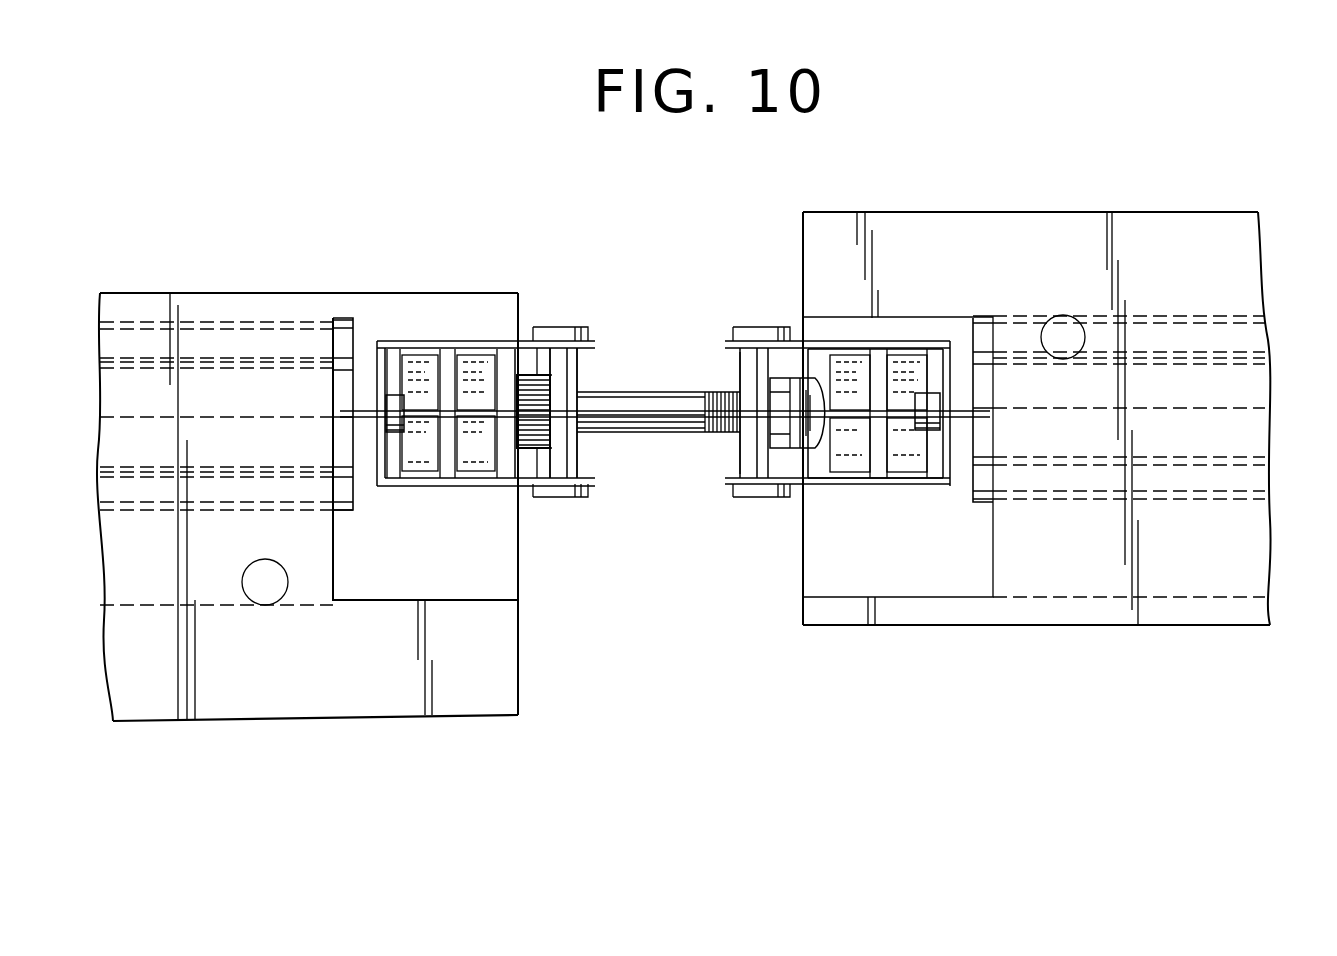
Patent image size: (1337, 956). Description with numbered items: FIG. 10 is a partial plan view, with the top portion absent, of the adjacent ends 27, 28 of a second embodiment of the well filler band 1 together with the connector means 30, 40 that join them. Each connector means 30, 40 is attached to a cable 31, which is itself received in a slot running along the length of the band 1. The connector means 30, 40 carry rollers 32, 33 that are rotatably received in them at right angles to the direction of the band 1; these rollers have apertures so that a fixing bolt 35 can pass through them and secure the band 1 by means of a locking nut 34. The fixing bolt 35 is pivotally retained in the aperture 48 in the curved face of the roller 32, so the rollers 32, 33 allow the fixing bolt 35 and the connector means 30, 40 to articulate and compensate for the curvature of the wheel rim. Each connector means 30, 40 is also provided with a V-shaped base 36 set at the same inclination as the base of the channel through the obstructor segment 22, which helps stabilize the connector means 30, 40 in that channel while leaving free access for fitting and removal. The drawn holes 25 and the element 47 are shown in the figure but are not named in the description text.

The obstructor segment 22 is at (213, 335).
The hole 25 is at (263, 592).
The adjacent end 27 is at (317, 730).
The adjacent end 28 is at (918, 630).
The band 1 is at (362, 410).
The connector means 30 is at (503, 338).
The cable 31 is at (385, 398).
The roller 32 is at (758, 494).
The roller 33 is at (563, 494).
The locking nut 34 is at (788, 376).
The fixing bolt 35 is at (668, 433).
The V-shaped base 36 is at (477, 360).
The connector means 40 is at (817, 340).
The plate 47 is at (580, 450).
The aperture 48 is at (738, 455).